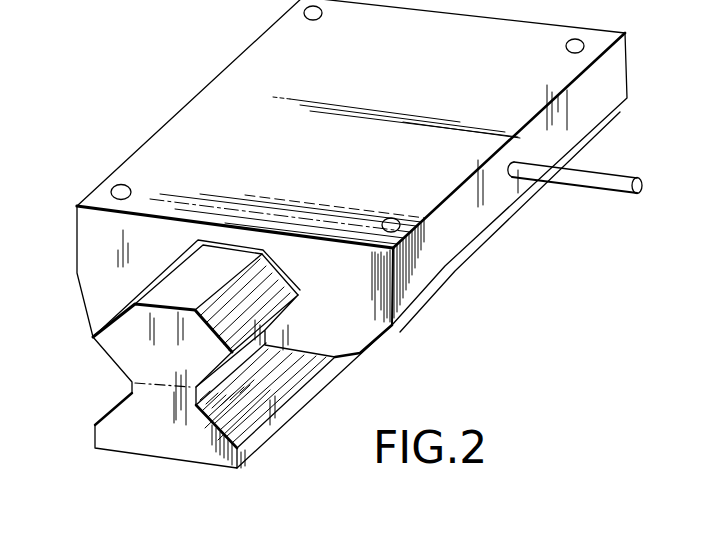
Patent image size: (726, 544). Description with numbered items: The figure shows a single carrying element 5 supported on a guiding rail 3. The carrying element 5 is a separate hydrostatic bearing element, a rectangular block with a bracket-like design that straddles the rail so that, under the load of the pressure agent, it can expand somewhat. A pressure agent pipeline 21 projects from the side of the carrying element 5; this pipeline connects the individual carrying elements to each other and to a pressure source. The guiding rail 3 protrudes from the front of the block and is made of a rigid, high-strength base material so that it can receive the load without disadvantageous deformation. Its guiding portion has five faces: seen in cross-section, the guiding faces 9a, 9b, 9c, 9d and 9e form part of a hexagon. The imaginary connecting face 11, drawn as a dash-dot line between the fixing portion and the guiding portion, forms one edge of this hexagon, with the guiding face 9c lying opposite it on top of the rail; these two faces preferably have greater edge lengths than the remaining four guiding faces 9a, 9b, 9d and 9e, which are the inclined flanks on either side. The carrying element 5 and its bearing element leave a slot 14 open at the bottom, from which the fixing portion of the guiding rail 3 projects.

The guiding rail 3 is at (140, 447).
The carrying element 5 is at (217, 93).
The guiding face 9a is at (97, 343).
The guiding face 9b is at (128, 298).
The guiding face 9c is at (172, 280).
The guiding face 9d is at (270, 295).
The guiding face 9e is at (231, 360).
The imaginary connecting face 11 is at (133, 385).
The slot 14 is at (337, 357).
The pressure agent pipeline 21 is at (641, 183).